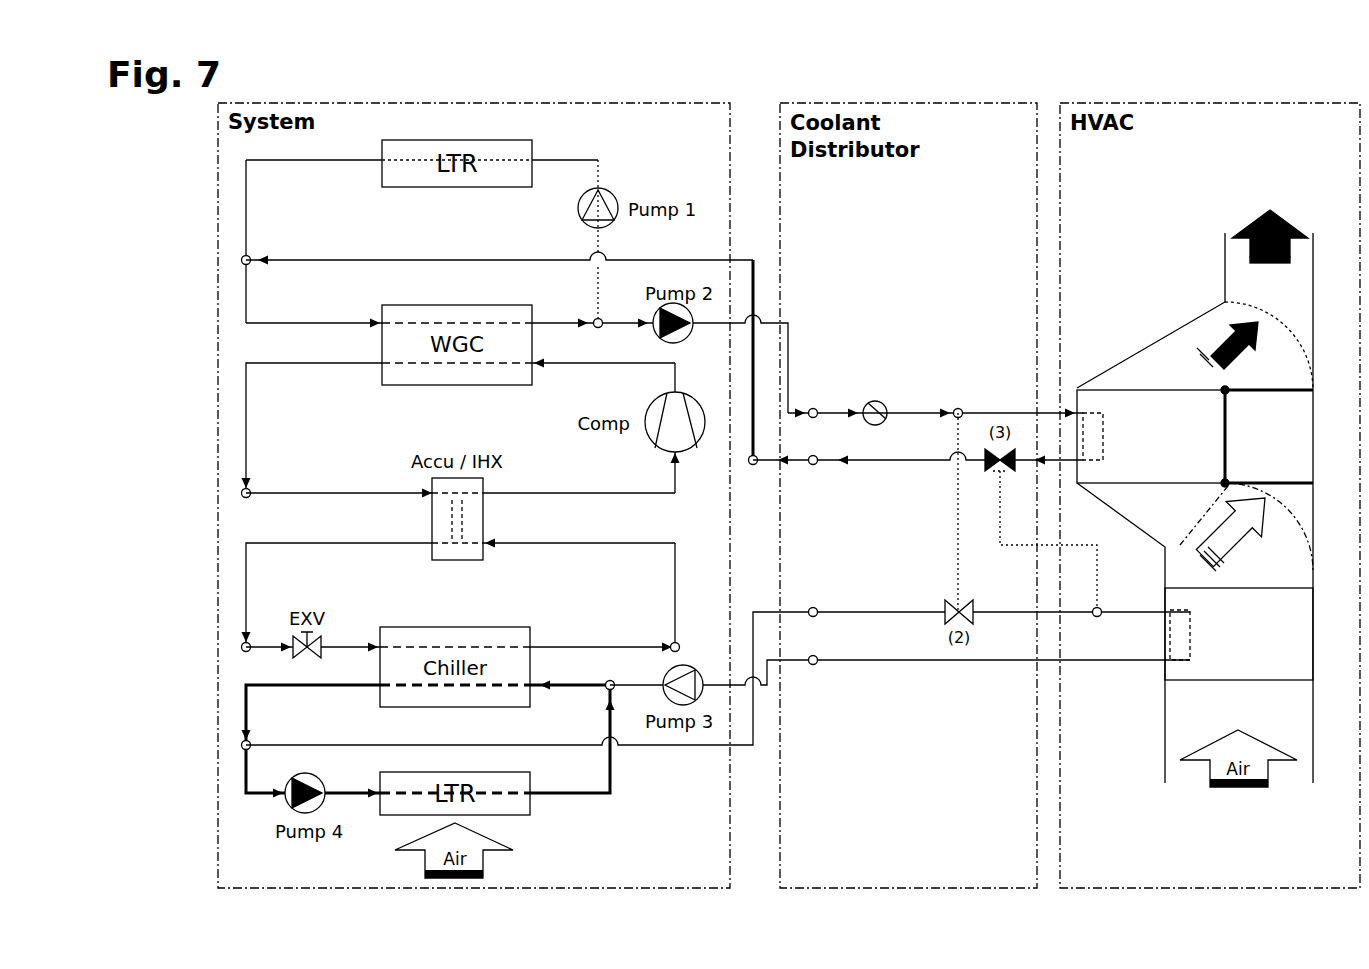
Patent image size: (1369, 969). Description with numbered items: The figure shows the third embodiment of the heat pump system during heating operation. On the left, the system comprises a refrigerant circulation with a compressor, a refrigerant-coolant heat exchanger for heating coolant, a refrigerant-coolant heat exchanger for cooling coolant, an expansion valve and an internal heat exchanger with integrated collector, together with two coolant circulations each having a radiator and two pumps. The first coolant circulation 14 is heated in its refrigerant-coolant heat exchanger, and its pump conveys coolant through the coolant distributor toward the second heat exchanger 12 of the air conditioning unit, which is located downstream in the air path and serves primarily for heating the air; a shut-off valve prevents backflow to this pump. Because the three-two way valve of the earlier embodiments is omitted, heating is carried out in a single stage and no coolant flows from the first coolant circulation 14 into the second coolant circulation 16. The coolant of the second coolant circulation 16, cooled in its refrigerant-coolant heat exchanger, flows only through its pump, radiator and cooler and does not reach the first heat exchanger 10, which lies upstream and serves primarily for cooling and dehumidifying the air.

The first heat exchanger 10 is at (1304, 623).
The second heat exchanger 12 is at (1212, 425).
The first coolant circulation 14 is at (812, 333).
The second coolant circulation 16 is at (796, 720).